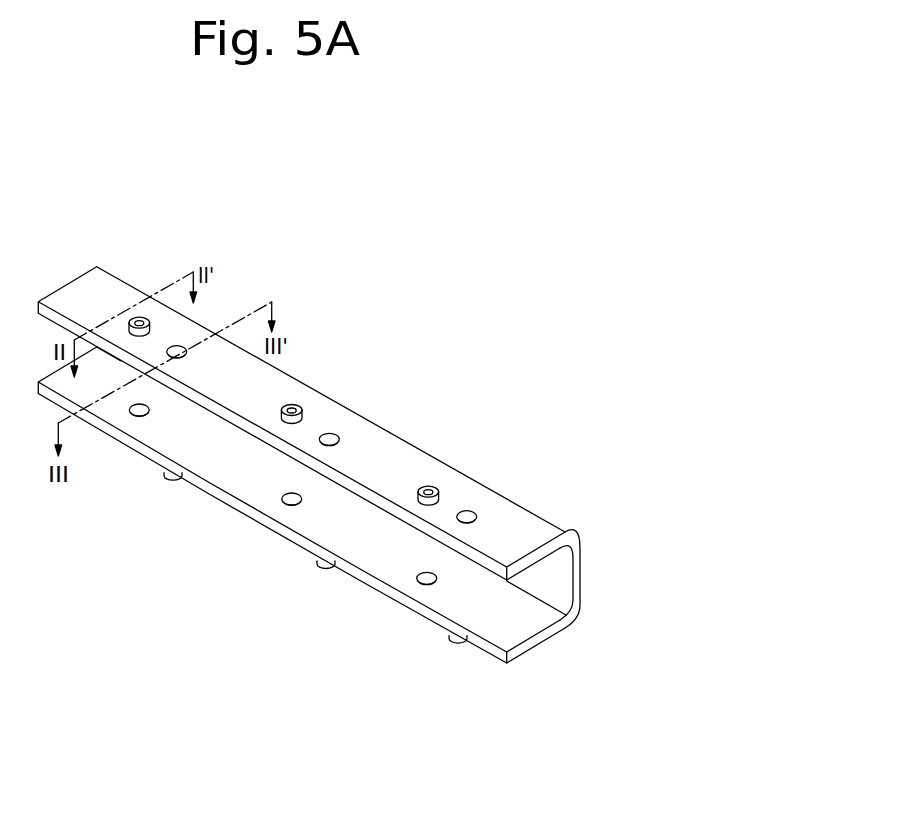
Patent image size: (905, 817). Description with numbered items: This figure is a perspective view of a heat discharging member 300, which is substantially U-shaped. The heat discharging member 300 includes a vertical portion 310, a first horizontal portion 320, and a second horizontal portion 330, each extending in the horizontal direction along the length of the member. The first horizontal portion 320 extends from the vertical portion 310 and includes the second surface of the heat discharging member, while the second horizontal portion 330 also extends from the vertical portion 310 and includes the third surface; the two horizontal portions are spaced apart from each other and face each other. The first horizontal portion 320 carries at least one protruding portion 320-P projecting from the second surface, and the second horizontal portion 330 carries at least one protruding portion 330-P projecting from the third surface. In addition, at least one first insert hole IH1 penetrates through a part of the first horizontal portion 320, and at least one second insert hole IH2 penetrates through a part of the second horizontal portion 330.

The heat discharging member 300 is at (485, 279).
The vertical portion 310 is at (566, 532).
The first horizontal portion 320 is at (580, 546).
The second horizontal portion 330 is at (580, 645).
The protruding portion 320-P is at (433, 481).
The protruding portion 330-P is at (325, 565).
The first insert hole IH1 is at (171, 348).
The second insert hole IH2 is at (137, 410).